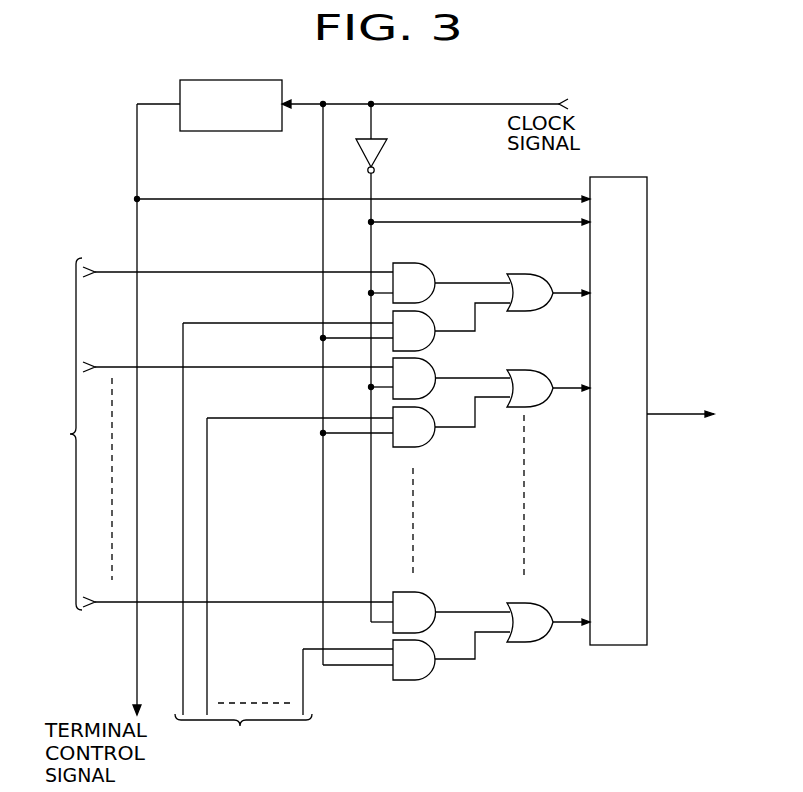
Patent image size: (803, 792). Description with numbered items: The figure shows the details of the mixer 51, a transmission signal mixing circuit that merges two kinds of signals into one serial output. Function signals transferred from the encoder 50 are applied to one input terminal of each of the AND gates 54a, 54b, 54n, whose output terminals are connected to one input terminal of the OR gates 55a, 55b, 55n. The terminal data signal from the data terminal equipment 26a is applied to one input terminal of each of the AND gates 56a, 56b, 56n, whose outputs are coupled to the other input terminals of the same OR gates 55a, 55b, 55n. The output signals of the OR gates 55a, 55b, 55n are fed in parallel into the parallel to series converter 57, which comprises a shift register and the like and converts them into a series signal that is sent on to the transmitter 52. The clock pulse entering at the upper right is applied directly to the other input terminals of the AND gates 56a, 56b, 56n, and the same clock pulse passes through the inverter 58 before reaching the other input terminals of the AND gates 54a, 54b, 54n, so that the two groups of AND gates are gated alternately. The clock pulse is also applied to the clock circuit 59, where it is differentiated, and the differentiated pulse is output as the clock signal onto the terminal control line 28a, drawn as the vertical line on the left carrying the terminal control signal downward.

The terminal control line 28a is at (137, 163).
The clock circuit 59 is at (255, 132).
The inverter 58 is at (380, 151).
The mixer 51 is at (240, 238).
The encoder 50 is at (217, 434).
The AND gate 54a is at (437, 257).
The AND gate 54b is at (432, 364).
The AND gate 54n is at (430, 597).
The AND gate 56a is at (434, 308).
The AND gate 56b is at (428, 441).
The AND gate 56n is at (425, 676).
The OR gate 55a is at (548, 275).
The OR gate 55b is at (520, 370).
The OR gate 55n is at (540, 603).
The parallel to series converter 57 is at (630, 177).
The transmitter 52 is at (681, 448).
The data terminal equipment 26a is at (265, 740).